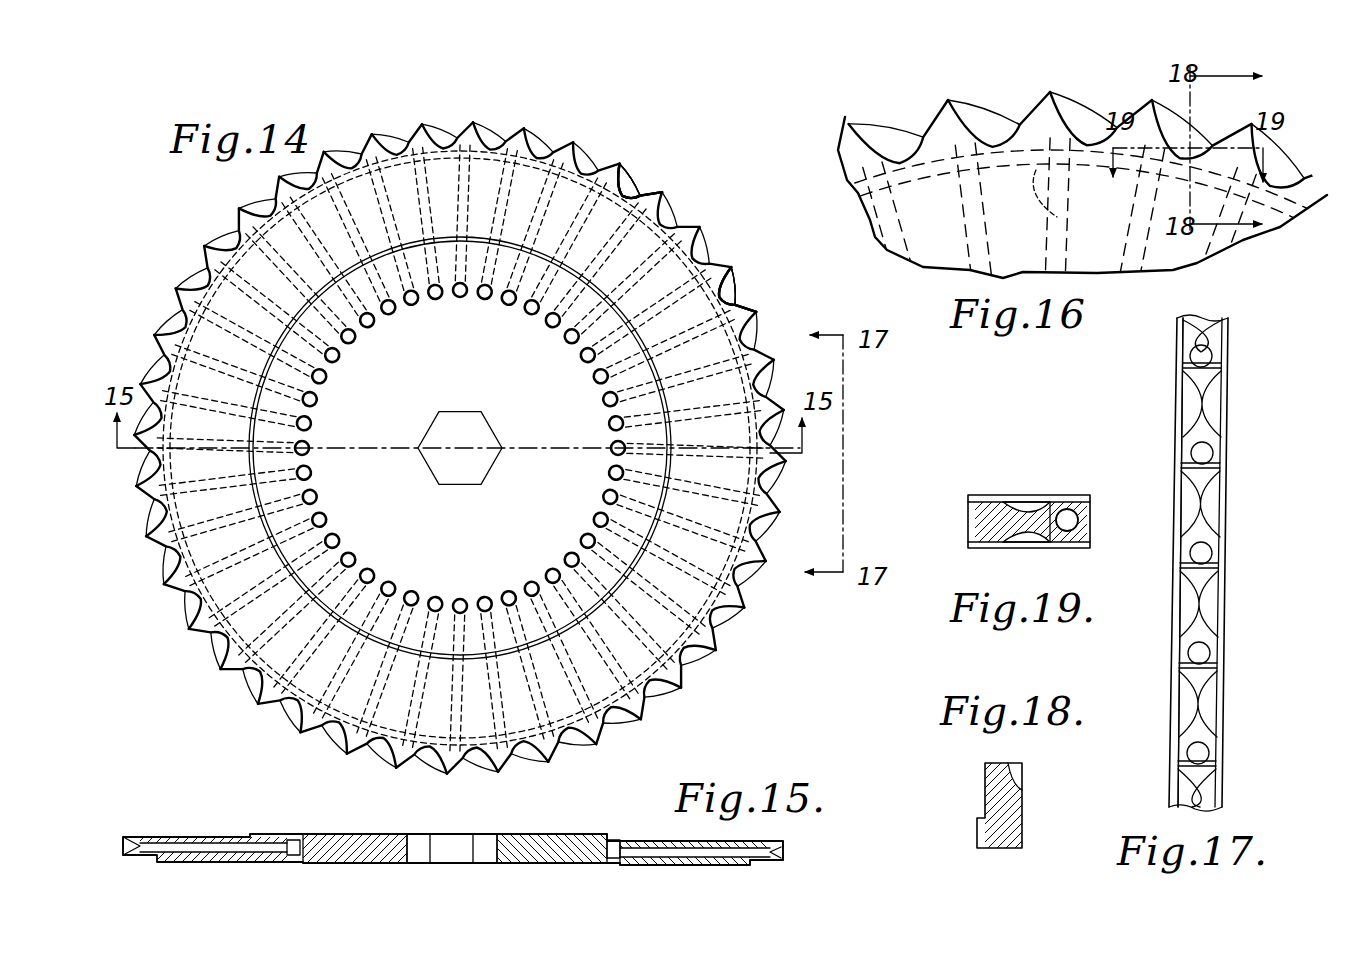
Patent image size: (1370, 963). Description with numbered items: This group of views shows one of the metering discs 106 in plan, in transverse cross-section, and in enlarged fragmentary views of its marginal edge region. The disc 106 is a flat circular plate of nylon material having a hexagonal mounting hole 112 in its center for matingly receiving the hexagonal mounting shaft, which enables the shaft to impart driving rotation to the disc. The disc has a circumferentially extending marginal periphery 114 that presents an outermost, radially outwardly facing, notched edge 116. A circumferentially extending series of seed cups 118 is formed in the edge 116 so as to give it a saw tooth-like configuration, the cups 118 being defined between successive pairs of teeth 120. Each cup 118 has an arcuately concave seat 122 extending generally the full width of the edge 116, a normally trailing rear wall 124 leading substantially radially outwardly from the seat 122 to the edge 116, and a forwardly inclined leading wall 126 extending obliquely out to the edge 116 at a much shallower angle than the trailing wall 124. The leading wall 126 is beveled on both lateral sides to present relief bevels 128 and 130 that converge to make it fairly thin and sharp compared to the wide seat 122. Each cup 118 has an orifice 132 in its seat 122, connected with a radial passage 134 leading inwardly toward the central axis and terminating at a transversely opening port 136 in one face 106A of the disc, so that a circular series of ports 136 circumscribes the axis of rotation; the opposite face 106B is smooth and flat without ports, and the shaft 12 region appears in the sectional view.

In FIG. 15, the hex drive shaft 12 is at (453, 847).
In FIG. 14, the metering disc 106 is at (649, 156).
In FIG. 15, the metering disc 106 is at (548, 820).
In FIG. 16, the metering disc 106 is at (1298, 176).
In FIG. 17, the metering disc 106 is at (1255, 445).
In FIG. 18, the metering disc 106 is at (970, 844).
In FIG. 19, the metering disc 106 is at (982, 487).
In FIG. 14, the face of the disc 106A is at (460, 448).
In FIG. 15, the face of the disc 106A is at (356, 836).
In FIG. 17, the face of the disc 106A is at (1176, 496).
In FIG. 15, the opposite face of the disc 106B is at (386, 864).
In FIG. 14, the hexagonal mounting hole 112 is at (483, 422).
In FIG. 14, the marginal periphery 114 is at (613, 182).
In FIG. 15, the marginal periphery 114 is at (767, 867).
In FIG. 16, the marginal periphery 114 is at (840, 168).
In FIG. 14, the notched edge 116 is at (618, 160).
In FIG. 15, the notched edge 116 is at (122, 843).
In FIG. 16, the notched edge 116 is at (1050, 90).
In FIG. 18, the notched edge 116 is at (1005, 766).
In FIG. 14, the seed cup 118 is at (723, 254).
In FIG. 15, the seed cup 118 is at (117, 851).
In FIG. 16, the seed cup 118 is at (920, 117).
In FIG. 17, the seed cup 118 is at (1205, 530).
In FIG. 14, the tooth 120 is at (733, 268).
In FIG. 16, the tooth 120 is at (946, 97).
In FIG. 18, the tooth 120 is at (1030, 799).
In FIG. 16, the arcuately concave seat 122 is at (1032, 117).
In FIG. 19, the arcuately concave seat 122 is at (1055, 505).
In FIG. 16, the trailing rear wall 124 is at (1045, 92).
In FIG. 19, the trailing rear wall 124 is at (1035, 535).
In FIG. 16, the leading wall 126 is at (968, 102).
In FIG. 17, the leading wall 126 is at (1207, 393).
In FIG. 16, the relief bevel 128 is at (990, 133).
In FIG. 17, the relief bevel 128 is at (1190, 404).
In FIG. 18, the relief bevel 128 is at (1020, 780).
In FIG. 17, the relief bevel 130 is at (1212, 402).
In FIG. 18, the relief bevel 130 is at (983, 792).
In FIG. 17, the orifice 132 is at (1212, 553).
In FIG. 19, the orifice 132 is at (1066, 516).
In FIG. 14, the radial passage 134 is at (590, 218).
In FIG. 15, the radial passage 134 is at (200, 850).
In FIG. 16, the radial passage 134 is at (1057, 217).
In FIG. 14, the port 136 is at (578, 343).
In FIG. 15, the port 136 is at (291, 841).